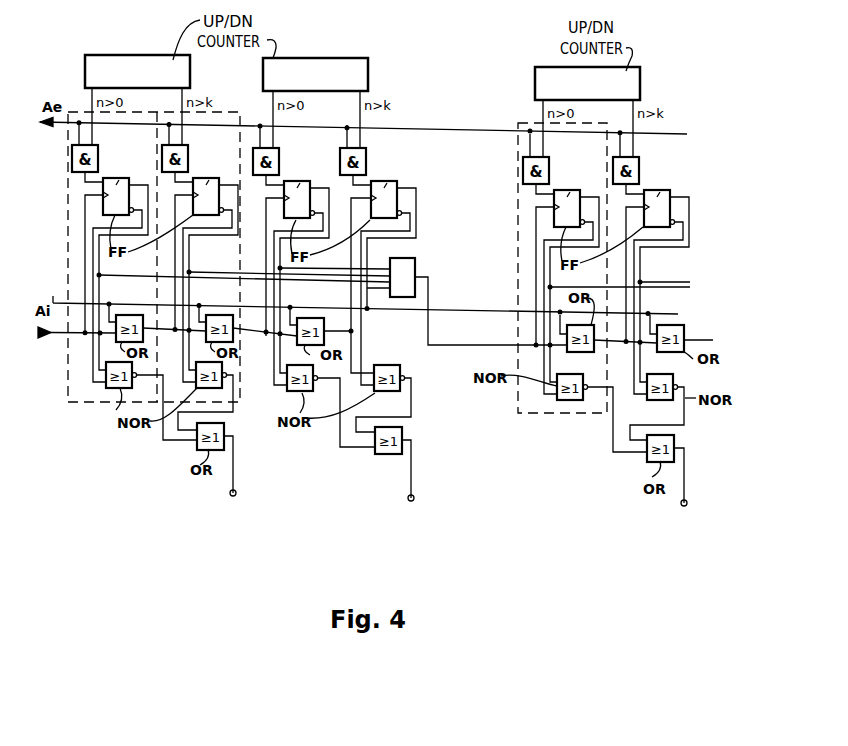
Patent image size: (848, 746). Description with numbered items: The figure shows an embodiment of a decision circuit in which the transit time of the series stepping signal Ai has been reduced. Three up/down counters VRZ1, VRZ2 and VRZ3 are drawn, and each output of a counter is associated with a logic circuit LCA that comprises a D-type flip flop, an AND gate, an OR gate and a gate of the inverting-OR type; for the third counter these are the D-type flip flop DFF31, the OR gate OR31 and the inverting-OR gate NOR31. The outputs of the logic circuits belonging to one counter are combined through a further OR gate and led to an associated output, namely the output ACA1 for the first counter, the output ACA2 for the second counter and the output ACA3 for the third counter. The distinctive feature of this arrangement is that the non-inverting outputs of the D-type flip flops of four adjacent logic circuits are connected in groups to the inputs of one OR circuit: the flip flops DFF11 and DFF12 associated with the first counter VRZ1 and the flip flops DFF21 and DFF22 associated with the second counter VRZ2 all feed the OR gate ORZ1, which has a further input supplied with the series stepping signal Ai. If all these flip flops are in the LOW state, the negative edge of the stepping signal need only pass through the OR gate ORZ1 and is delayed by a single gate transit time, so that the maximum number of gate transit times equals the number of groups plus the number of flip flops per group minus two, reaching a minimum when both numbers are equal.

The up/down counter VRZ1 is at (137, 71).
The up/down counter VRZ2 is at (315, 74).
The up/down counter VRZ3 is at (587, 83).
The D-type flip flop DFF11 is at (125, 185).
The D-type flip flop DFF12 is at (215, 185).
The D-type flip flop DFF21 is at (306, 188).
The D-type flip flop DFF22 is at (393, 188).
The D-type flip flop DFF31 is at (576, 197).
The OR gate ORZ1 is at (426, 276).
The OR gate OR31 is at (585, 347).
The NOR gate NOR31 is at (563, 405).
The output ACA1 is at (256, 466).
The output ACA2 is at (434, 470).
The output ACA3 is at (705, 477).
The logic circuit LCA is at (84, 396).